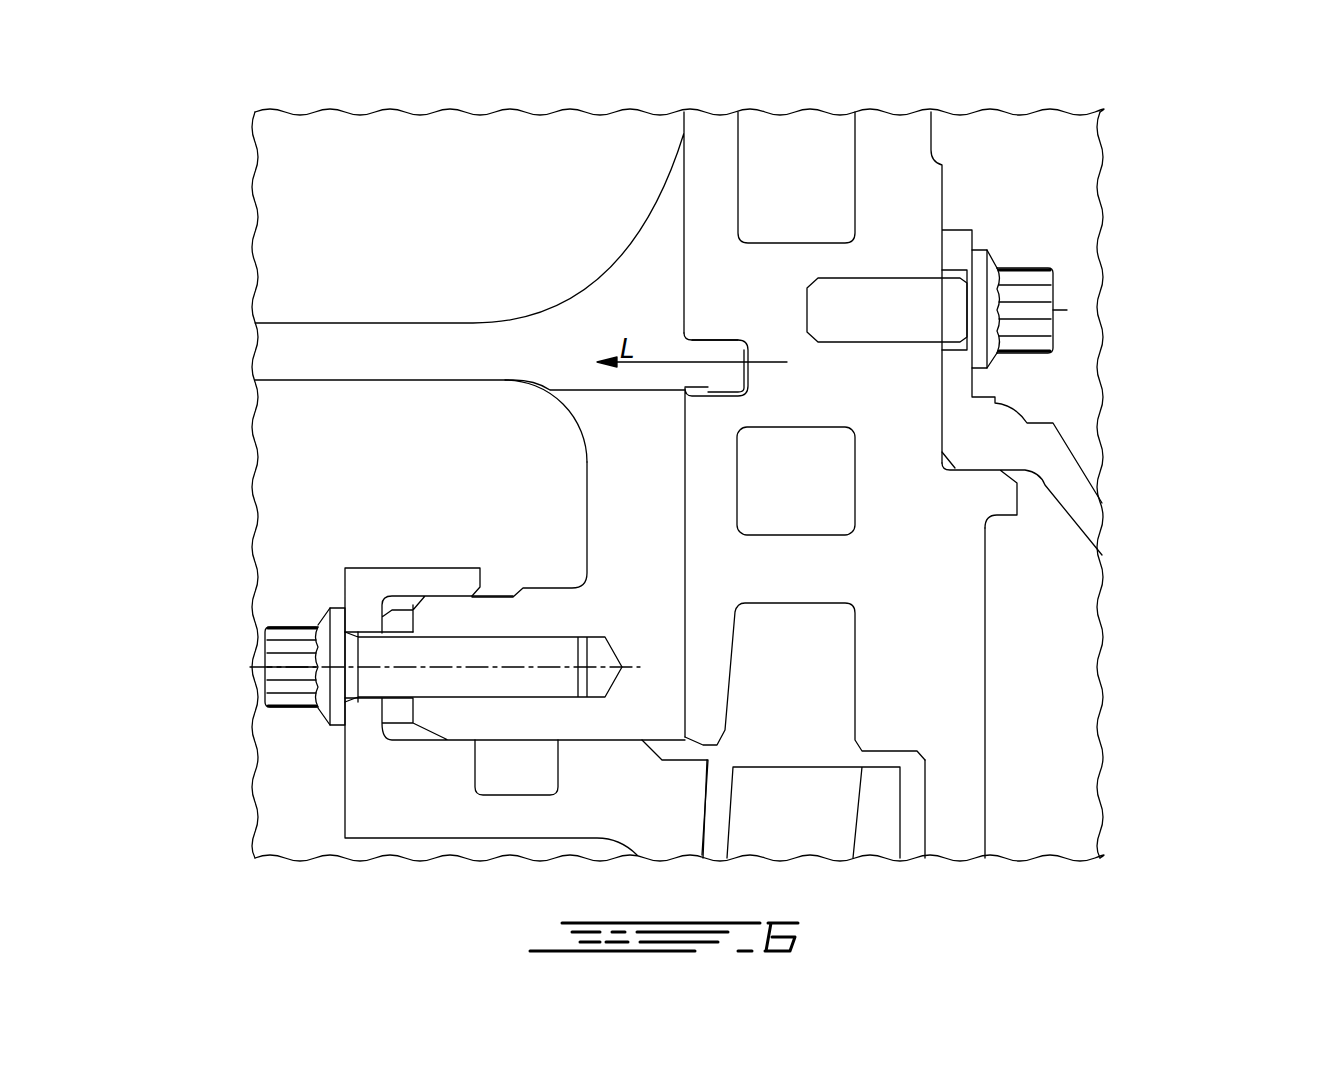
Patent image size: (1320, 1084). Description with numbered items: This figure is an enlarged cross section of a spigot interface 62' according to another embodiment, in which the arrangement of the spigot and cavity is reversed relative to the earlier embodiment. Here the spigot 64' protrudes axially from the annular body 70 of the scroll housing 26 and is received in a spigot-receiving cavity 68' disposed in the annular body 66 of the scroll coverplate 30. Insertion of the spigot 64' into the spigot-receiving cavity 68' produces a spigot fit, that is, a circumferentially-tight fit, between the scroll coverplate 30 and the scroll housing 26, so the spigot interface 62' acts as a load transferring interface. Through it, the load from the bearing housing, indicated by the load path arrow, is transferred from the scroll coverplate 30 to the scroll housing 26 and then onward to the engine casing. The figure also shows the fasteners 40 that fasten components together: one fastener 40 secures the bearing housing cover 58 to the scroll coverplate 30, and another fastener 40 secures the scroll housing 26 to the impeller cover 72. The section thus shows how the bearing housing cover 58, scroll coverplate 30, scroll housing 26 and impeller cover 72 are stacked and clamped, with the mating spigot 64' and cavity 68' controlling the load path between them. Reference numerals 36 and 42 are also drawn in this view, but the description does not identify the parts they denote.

The scroll housing 26 is at (476, 475).
The scroll coverplate 30 is at (1058, 723).
The combustion chamber 36 is at (453, 350).
The fasteners 40 is at (290, 683).
The casing flange 42 is at (789, 705).
The bearing housing cover 58 is at (1030, 454).
The spigot interface 62' is at (646, 192).
The spigot 64' is at (744, 400).
The annular body of the scroll coverplate 66 is at (955, 635).
The spigot-receiving cavity 68' is at (373, 421).
The annular body of the scroll housing 70 is at (632, 533).
The impeller cover 72 is at (417, 812).